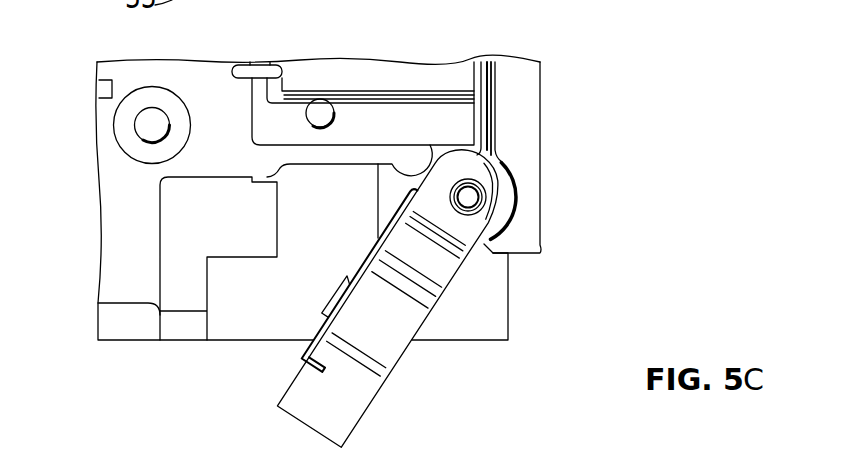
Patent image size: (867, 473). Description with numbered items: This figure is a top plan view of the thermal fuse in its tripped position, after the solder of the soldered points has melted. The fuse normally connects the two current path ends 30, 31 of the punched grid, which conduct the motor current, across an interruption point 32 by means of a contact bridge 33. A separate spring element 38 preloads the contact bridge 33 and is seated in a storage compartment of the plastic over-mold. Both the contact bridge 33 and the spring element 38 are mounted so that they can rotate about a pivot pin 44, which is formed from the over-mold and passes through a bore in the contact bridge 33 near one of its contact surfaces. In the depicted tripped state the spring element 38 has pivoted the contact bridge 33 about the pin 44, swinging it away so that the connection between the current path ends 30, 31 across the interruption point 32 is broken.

The current path end 30 is at (393, 190).
The current path end 31 is at (230, 217).
The interruption point 32 is at (303, 289).
The contact bridge 33 is at (345, 422).
The spring element 38 is at (497, 204).
The pivot pin 44 is at (468, 198).